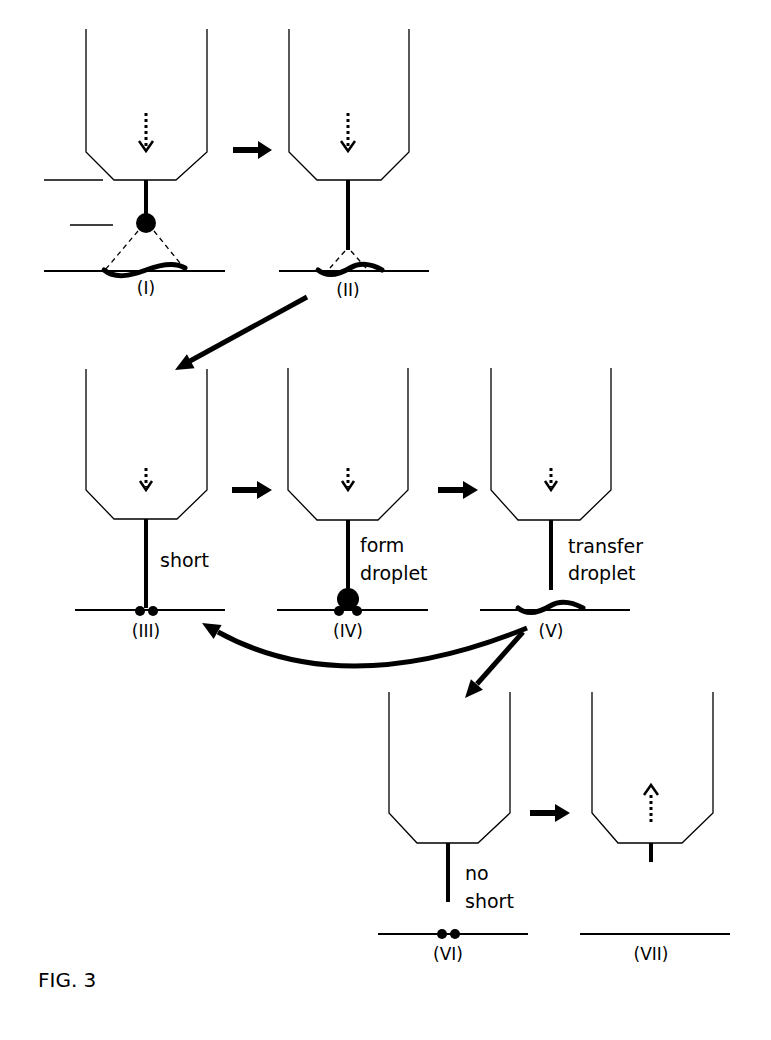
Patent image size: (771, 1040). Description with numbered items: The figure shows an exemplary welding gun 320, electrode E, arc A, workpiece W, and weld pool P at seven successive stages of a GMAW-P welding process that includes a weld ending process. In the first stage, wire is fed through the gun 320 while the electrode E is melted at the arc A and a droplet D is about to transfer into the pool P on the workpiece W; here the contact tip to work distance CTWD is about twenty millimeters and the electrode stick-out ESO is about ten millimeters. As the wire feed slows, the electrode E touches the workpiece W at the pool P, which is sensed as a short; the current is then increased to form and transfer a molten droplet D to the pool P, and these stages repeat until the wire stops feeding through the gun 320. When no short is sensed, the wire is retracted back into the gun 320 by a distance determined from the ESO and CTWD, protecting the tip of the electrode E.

The welding gun 320 is at (201, 43).
The electrode E is at (150, 202).
The droplet D is at (155, 218).
The arc A is at (167, 252).
The weld pool P is at (117, 274).
The workpiece W is at (218, 271).
The electrode stick-out ESO is at (92, 184).
The contact tip to work distance CTWD is at (50, 184).